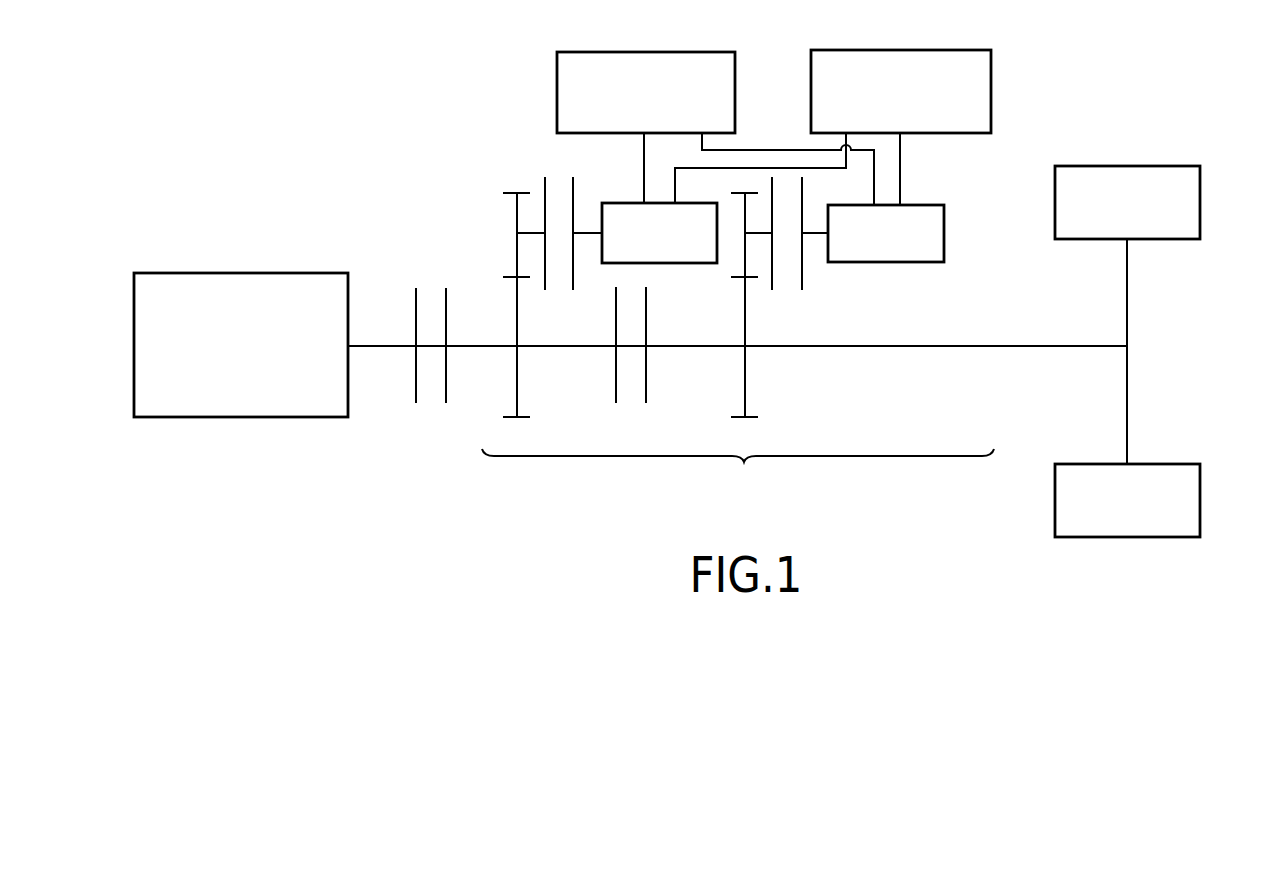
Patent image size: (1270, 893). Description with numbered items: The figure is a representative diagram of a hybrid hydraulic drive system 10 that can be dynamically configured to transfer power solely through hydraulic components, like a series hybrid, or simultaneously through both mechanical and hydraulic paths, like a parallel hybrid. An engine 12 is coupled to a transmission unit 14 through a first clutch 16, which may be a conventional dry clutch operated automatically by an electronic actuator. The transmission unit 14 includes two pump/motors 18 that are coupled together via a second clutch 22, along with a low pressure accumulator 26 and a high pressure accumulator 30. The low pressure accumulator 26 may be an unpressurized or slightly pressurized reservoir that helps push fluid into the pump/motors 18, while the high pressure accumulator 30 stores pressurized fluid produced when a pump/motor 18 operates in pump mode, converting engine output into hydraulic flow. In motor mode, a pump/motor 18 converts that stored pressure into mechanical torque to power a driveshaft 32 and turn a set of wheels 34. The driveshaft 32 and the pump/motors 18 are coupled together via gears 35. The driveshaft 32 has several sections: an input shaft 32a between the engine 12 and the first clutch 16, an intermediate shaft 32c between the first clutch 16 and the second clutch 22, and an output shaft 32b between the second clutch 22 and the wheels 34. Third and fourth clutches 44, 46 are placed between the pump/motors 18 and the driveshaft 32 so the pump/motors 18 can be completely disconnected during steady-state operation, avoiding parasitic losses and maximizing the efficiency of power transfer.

The hybrid hydraulic drive system 10 is at (1110, 105).
The engine 12 is at (254, 418).
The transmission unit 14 is at (744, 462).
The first clutch 16 is at (430, 288).
The pump/motor 18 is at (688, 265).
The second clutch 22 is at (632, 404).
The low pressure accumulator 26 is at (993, 90).
The high pressure accumulator 30 is at (556, 90).
The driveshaft 32 is at (1010, 348).
The input shaft 32a is at (381, 348).
The output shaft 32b is at (1080, 348).
The intermediate shaft 32c is at (492, 345).
The wheels 34 is at (1202, 191).
The gears 35 is at (519, 372).
The third clutch 44 is at (550, 292).
The fourth clutch 46 is at (783, 292).